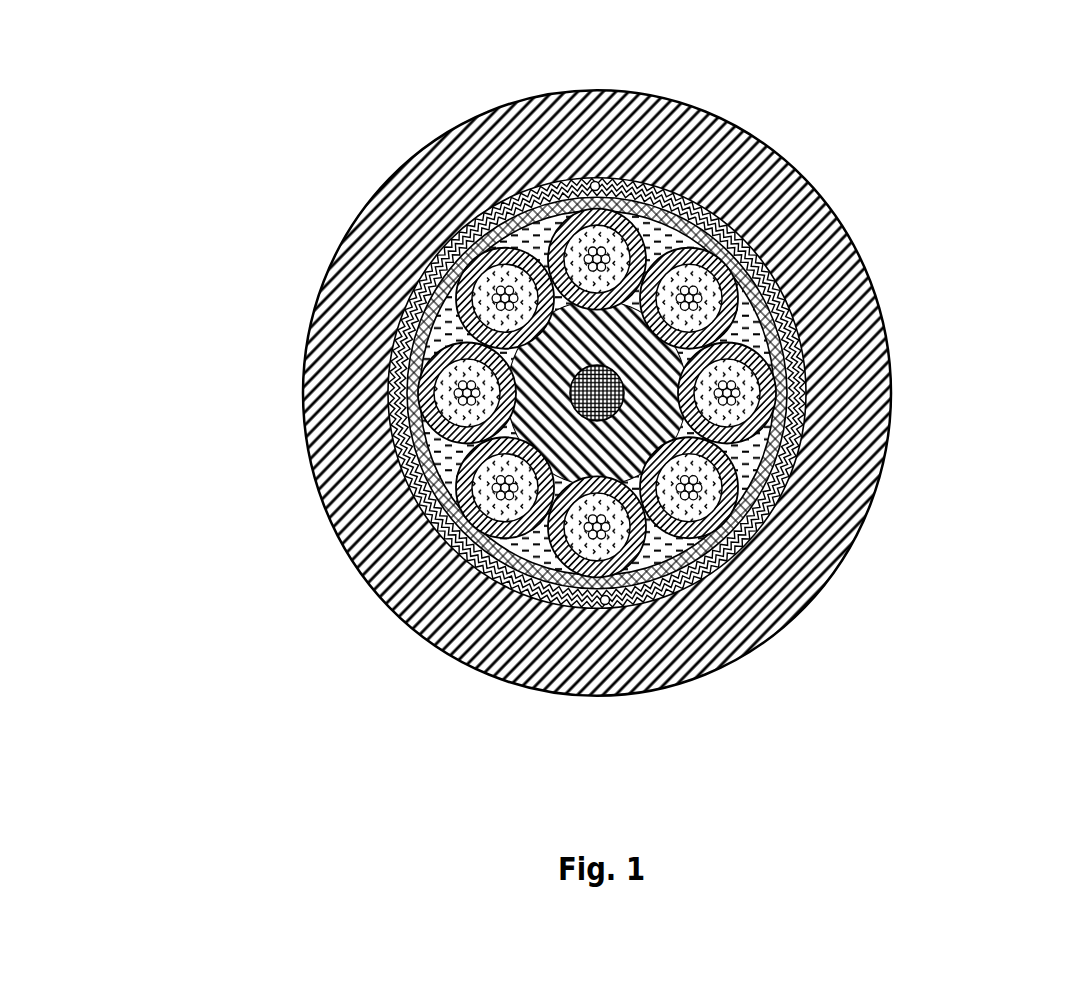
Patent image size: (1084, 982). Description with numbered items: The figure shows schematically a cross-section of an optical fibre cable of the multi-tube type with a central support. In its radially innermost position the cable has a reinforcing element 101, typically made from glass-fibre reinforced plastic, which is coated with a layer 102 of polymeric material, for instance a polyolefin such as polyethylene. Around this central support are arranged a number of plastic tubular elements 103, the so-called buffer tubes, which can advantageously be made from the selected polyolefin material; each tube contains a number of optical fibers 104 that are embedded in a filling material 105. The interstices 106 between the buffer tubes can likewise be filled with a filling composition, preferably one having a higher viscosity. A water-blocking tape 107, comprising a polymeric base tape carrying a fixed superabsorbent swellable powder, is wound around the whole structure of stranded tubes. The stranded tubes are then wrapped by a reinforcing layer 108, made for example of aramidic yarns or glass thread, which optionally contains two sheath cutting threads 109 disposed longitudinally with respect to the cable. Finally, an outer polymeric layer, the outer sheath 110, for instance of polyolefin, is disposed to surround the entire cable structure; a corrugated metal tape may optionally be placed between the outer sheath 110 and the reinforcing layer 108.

The reinforcing element 101 is at (572, 386).
The layer of polymeric material 102 is at (430, 455).
The plastic tubular element 103 is at (598, 523).
The optical fibers 104 is at (400, 604).
The filling material 105 is at (440, 532).
The interstices 106 is at (455, 208).
The water-blocking tape 107 is at (797, 192).
The reinforcing layer 108 is at (775, 348).
The sheath cutting threads 109 is at (593, 180).
The outer sheath 110 is at (843, 420).